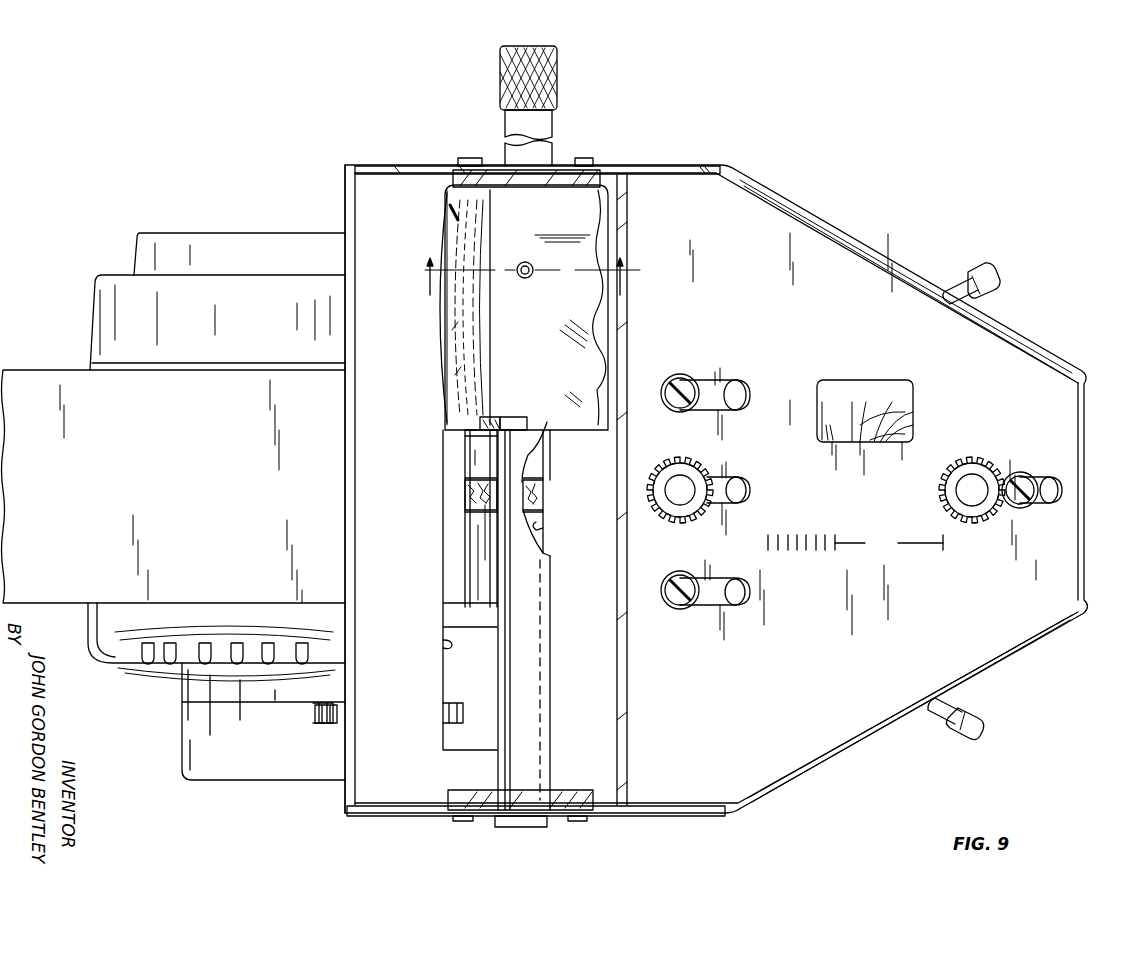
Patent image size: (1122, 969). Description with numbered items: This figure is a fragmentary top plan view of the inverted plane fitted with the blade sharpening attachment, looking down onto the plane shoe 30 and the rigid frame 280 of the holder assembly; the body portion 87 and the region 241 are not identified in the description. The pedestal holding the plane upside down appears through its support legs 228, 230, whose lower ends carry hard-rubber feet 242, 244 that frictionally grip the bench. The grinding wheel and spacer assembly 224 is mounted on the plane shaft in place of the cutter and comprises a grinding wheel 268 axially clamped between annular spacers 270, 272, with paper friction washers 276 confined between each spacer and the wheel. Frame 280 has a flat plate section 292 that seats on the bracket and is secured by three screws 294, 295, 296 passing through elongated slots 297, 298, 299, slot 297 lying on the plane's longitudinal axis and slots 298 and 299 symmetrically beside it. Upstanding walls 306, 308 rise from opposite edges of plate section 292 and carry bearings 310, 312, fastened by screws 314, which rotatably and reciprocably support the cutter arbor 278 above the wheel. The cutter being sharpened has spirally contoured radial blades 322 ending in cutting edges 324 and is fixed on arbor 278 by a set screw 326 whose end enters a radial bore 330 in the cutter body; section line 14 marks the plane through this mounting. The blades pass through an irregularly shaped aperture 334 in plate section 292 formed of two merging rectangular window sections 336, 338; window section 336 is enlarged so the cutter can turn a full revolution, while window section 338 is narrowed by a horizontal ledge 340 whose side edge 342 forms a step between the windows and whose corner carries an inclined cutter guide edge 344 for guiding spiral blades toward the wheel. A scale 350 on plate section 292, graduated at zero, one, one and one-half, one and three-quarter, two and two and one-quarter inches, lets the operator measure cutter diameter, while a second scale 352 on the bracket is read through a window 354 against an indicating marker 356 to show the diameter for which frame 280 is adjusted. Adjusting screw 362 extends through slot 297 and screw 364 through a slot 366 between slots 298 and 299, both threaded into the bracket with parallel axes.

The section line 14- 14 is at (531, 281).
The shoe 30 is at (208, 494).
The lower body housing 87 is at (273, 788).
The grinding wheel and spacer assembly 224 is at (454, 549).
The support leg 228 is at (945, 718).
The support leg 230 is at (950, 292).
The lens face 241 is at (437, 316).
The foot 242 is at (985, 715).
The foot 244 is at (982, 265).
The grinding wheel 268 is at (466, 498).
The annular spacer 270 is at (478, 572).
The annular spacer 272 is at (470, 450).
The paper friction washer 276 is at (478, 473).
The cutter arbor 278 is at (558, 78).
The rigid frame 280 is at (1045, 352).
The flat plate section 292 is at (777, 716).
The screw 294 is at (1018, 508).
The screw 295 is at (676, 607).
The screw 296 is at (684, 385).
The slot 297 is at (1048, 478).
The slot 298 is at (738, 598).
The slot 299 is at (735, 395).
The upstanding wall 306 is at (580, 170).
The upstanding wall 308 is at (447, 815).
The bearing 310 is at (600, 165).
The bearing 312 is at (600, 805).
The screw 314 is at (472, 157).
The radial blade 322 is at (455, 255).
The cutting edge 324 is at (445, 340).
The set screw 326 is at (528, 278).
The radial bore 330 is at (530, 262).
The aperture 334 is at (462, 754).
The window section 336 is at (460, 188).
The window section 338 is at (443, 644).
The horizontal ledge 340 is at (600, 667).
The side edge 342 is at (578, 430).
The cutter guide edge 344 is at (535, 435).
The scale 350 is at (857, 534).
The scale 352 is at (905, 408).
The window 354 is at (905, 440).
The indicating marker 356 is at (905, 425).
The screw 362 is at (940, 503).
The screw 364 is at (688, 520).
The slot 366 is at (747, 490).